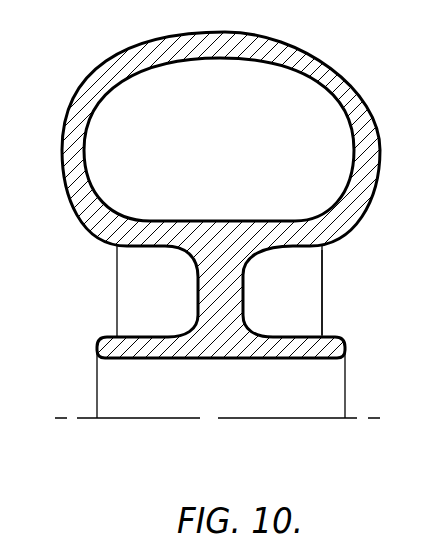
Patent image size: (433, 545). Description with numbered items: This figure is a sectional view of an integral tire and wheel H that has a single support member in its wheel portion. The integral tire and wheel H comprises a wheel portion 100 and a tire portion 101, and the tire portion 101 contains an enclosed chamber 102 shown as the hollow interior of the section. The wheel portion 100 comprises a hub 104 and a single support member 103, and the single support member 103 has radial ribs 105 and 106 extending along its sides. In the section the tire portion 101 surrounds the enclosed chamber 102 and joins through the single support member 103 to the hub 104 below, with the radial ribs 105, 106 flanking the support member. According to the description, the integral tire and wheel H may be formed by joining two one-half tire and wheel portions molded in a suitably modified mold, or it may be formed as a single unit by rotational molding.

The wheel portion 100 is at (322, 263).
The tire portion 101 is at (102, 83).
The enclosed chamber 102 is at (236, 140).
The integral tire and wheel H is at (226, 132).
The single support member 103 is at (210, 290).
The hub 104 is at (123, 350).
The radial rib 105 is at (285, 297).
The radial rib 106 is at (133, 267).